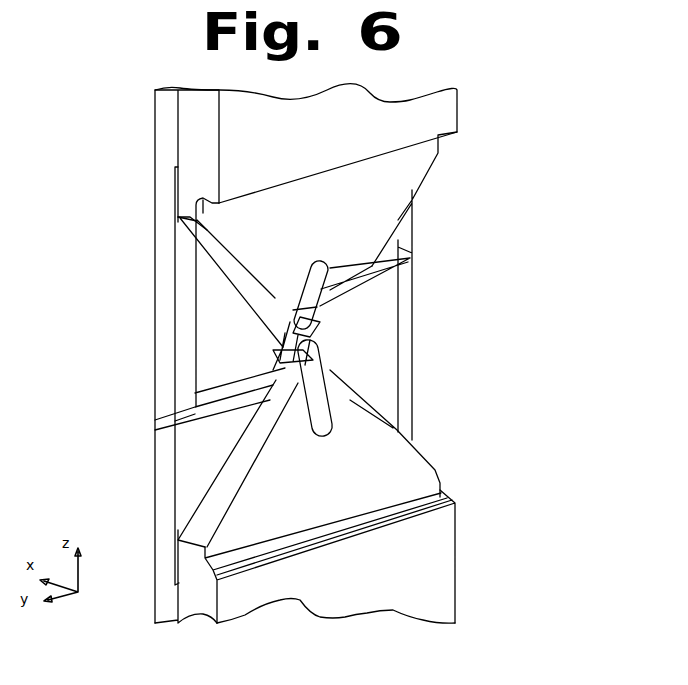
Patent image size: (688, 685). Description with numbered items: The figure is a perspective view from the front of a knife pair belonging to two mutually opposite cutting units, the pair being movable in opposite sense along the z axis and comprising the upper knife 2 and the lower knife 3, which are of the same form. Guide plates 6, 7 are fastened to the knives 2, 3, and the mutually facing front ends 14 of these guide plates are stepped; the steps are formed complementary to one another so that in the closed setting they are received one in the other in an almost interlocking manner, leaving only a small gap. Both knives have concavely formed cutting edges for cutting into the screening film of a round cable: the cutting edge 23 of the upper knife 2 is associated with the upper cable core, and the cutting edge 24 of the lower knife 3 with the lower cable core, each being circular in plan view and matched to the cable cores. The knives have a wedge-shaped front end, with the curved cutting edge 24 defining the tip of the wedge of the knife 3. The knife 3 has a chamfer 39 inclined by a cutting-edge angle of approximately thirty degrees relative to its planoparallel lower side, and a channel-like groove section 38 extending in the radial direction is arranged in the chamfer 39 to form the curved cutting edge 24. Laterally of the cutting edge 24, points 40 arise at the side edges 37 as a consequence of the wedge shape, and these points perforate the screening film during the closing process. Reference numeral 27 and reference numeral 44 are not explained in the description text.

The upper knife 2 is at (433, 115).
The lower knife 3 is at (430, 552).
The guide plate 6 is at (165, 127).
The guide plate 7 is at (167, 497).
The front end 14 is at (167, 480).
The cutting edge 23 is at (410, 258).
The cutting edge 24 is at (320, 332).
The upper left strut 27 is at (272, 298).
The side edge 37 is at (230, 482).
The channel-like groove section 38 is at (320, 387).
The chamfer 39 is at (330, 413).
The point 40 is at (283, 347).
The lower right strut 44 is at (373, 467).